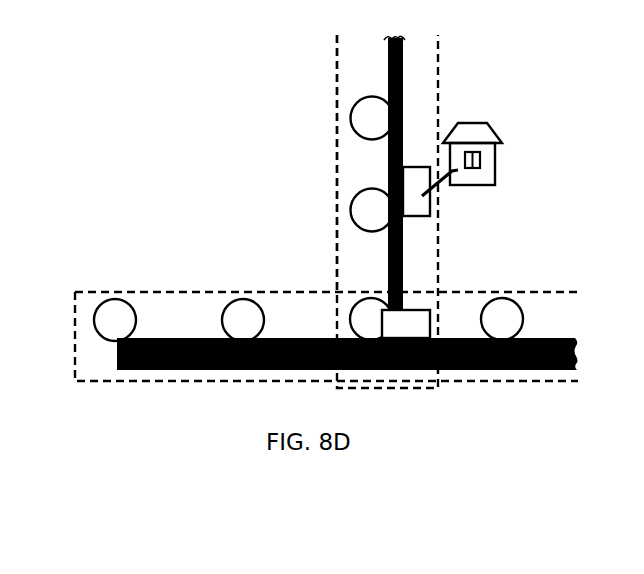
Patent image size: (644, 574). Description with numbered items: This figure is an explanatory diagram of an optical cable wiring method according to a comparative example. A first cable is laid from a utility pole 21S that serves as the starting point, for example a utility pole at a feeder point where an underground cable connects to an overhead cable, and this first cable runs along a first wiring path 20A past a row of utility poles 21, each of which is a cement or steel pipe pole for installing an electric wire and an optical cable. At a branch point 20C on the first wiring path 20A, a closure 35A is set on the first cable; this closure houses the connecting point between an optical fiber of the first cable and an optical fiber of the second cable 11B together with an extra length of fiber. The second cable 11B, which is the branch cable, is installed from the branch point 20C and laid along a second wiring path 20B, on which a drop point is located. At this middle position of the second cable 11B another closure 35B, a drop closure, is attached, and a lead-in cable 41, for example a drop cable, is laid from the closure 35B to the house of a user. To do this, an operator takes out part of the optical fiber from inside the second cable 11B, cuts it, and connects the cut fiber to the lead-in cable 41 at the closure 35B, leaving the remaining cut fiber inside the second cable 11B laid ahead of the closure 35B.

The second cable 11B is at (403, 68).
The first wiring path 20A is at (550, 292).
The second wiring path 20B is at (337, 83).
The branch point 20C is at (356, 300).
The utility pole 21 is at (351, 118).
The utility pole being the starting point 21S is at (115, 300).
The closure 35A is at (412, 318).
The closure 35B is at (430, 207).
The lead-in cable 41 is at (443, 178).